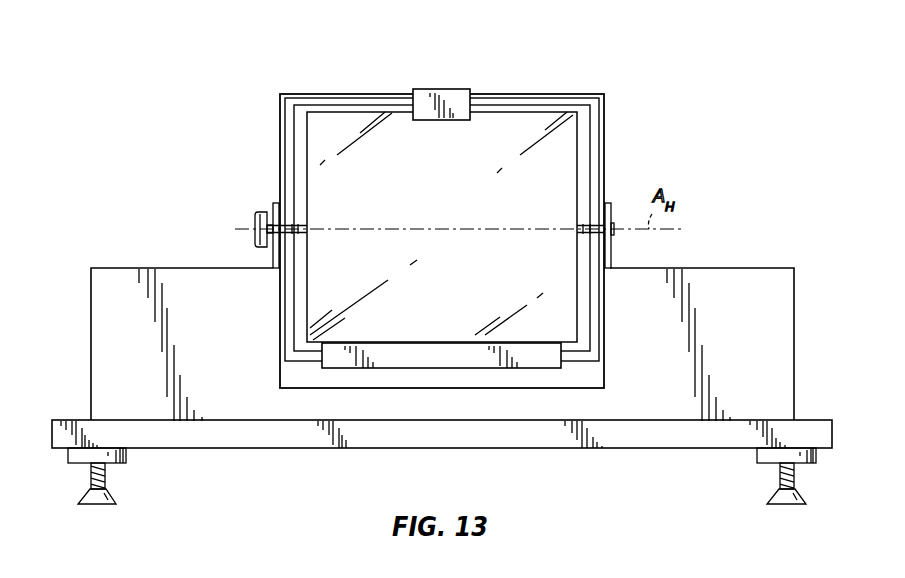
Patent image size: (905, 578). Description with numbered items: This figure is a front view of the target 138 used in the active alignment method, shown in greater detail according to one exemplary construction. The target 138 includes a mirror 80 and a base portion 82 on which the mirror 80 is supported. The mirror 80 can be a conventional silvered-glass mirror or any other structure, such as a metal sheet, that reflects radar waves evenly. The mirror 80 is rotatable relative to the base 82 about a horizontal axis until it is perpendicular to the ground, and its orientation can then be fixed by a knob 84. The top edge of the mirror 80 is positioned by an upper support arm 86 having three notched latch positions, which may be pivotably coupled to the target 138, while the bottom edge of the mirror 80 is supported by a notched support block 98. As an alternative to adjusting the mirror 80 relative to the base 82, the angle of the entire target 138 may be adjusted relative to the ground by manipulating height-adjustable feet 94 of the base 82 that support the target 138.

The mirror 80 is at (570, 160).
The base portion 82 is at (770, 345).
The knob 84 is at (259, 213).
The upper support arm 86 is at (455, 89).
The height-adjustable feet 94 is at (106, 474).
The notched support block 98 is at (536, 360).
The target 138 is at (783, 229).